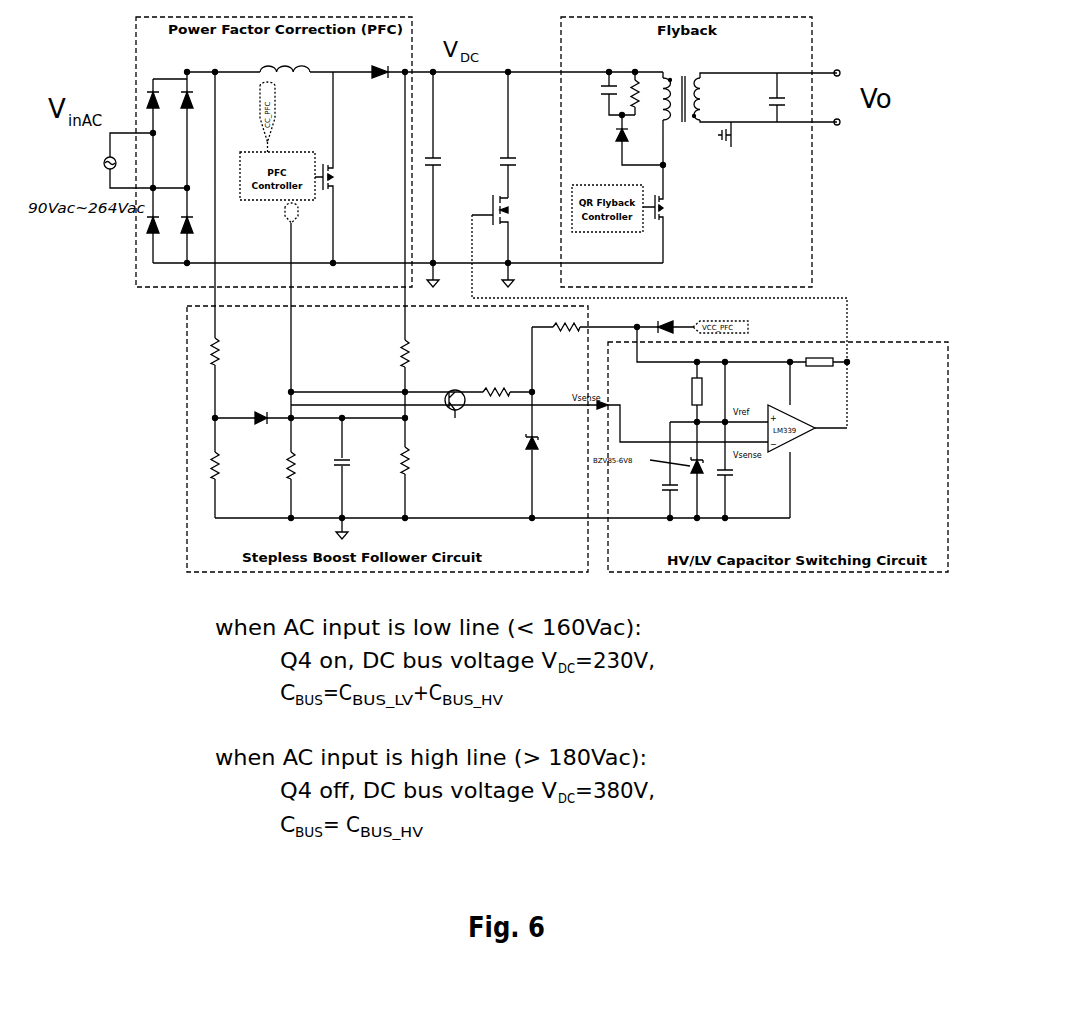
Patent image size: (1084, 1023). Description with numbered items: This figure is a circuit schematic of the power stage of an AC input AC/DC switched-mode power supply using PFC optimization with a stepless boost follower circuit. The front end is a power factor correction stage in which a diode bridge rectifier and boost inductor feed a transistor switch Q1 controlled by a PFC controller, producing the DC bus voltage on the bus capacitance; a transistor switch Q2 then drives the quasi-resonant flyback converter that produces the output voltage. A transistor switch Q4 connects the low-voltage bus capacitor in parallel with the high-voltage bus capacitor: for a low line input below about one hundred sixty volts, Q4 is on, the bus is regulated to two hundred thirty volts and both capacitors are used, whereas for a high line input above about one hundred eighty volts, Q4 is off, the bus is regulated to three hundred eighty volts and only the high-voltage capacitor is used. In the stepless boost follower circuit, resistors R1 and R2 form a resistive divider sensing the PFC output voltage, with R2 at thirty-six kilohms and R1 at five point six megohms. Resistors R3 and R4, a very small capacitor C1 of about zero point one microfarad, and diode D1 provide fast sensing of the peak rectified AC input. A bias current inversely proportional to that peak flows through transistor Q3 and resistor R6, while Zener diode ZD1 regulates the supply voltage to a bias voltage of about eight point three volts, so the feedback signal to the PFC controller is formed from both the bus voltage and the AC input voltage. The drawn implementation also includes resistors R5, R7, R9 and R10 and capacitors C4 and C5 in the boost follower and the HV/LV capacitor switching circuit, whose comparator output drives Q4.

The transistor switch Q1 is at (343, 167).
The transistor switch Q2 is at (674, 214).
The transistor Q3 is at (456, 389).
The transistor switch Q4 is at (506, 229).
The resistor R1 is at (424, 353).
The resistor R2 is at (422, 466).
The resistor R3 is at (237, 352).
The resistor R4 is at (234, 467).
The resistor 1M ohm R5 is at (306, 467).
The resistor R6 is at (496, 379).
The resistor 10K ohm R7 is at (566, 344).
The resistor 10K ohm R9 is at (680, 380).
The resistor 1K ohm R10 is at (819, 377).
The capacitor C1 is at (357, 467).
The capacitor 0.1uF C4 is at (653, 497).
The capacitor 0.1uF C5 is at (744, 488).
The diode D1 is at (261, 411).
The Zener diode ZD1 is at (520, 445).